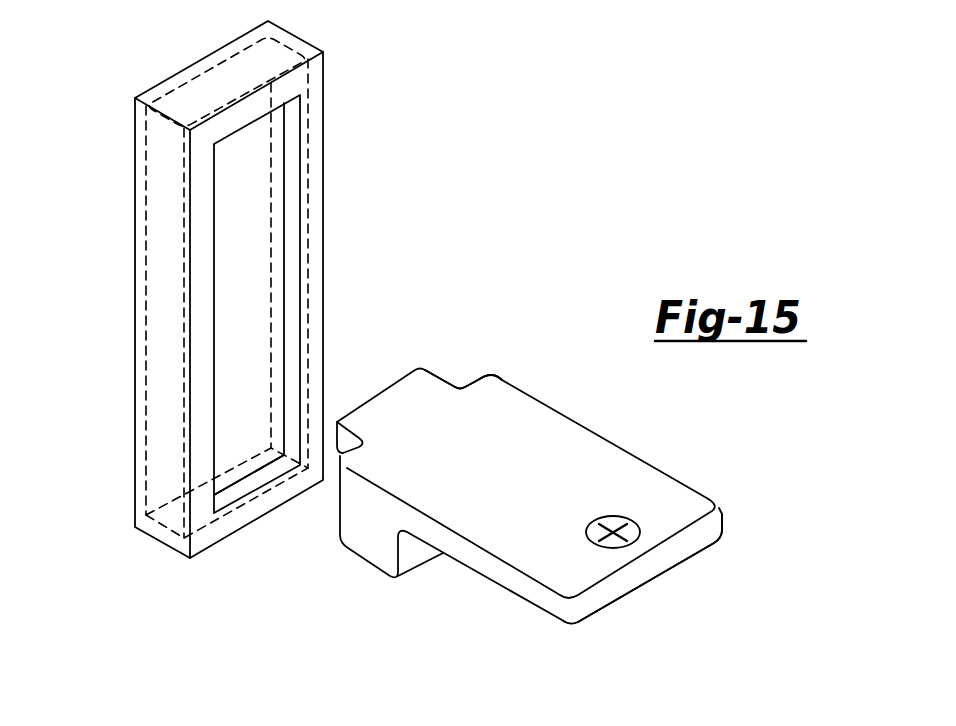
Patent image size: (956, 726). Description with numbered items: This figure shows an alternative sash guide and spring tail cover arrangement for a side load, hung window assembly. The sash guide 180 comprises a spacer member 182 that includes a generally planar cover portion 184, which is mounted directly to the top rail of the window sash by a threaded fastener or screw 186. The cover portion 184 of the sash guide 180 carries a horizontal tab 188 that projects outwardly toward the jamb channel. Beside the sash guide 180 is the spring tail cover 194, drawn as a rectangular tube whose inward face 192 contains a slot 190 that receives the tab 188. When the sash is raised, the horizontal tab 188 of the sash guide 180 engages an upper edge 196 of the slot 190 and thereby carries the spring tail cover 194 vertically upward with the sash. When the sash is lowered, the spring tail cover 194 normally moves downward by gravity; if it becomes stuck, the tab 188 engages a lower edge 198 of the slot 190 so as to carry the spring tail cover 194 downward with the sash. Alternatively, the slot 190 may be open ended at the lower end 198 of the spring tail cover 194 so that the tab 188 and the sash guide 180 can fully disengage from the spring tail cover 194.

The sash guide 180 is at (701, 480).
The spacer member 182 is at (526, 484).
The cover portion 184 is at (707, 568).
The threaded fastener or screw 186 is at (573, 515).
The horizontal tab 188 is at (474, 343).
The slot 190 is at (329, 299).
The inward face 192 is at (313, 78).
The spring tail cover 194 is at (190, 97).
The upper edge of the slot 196 is at (332, 304).
The lower edge of the slot 198 is at (158, 463).